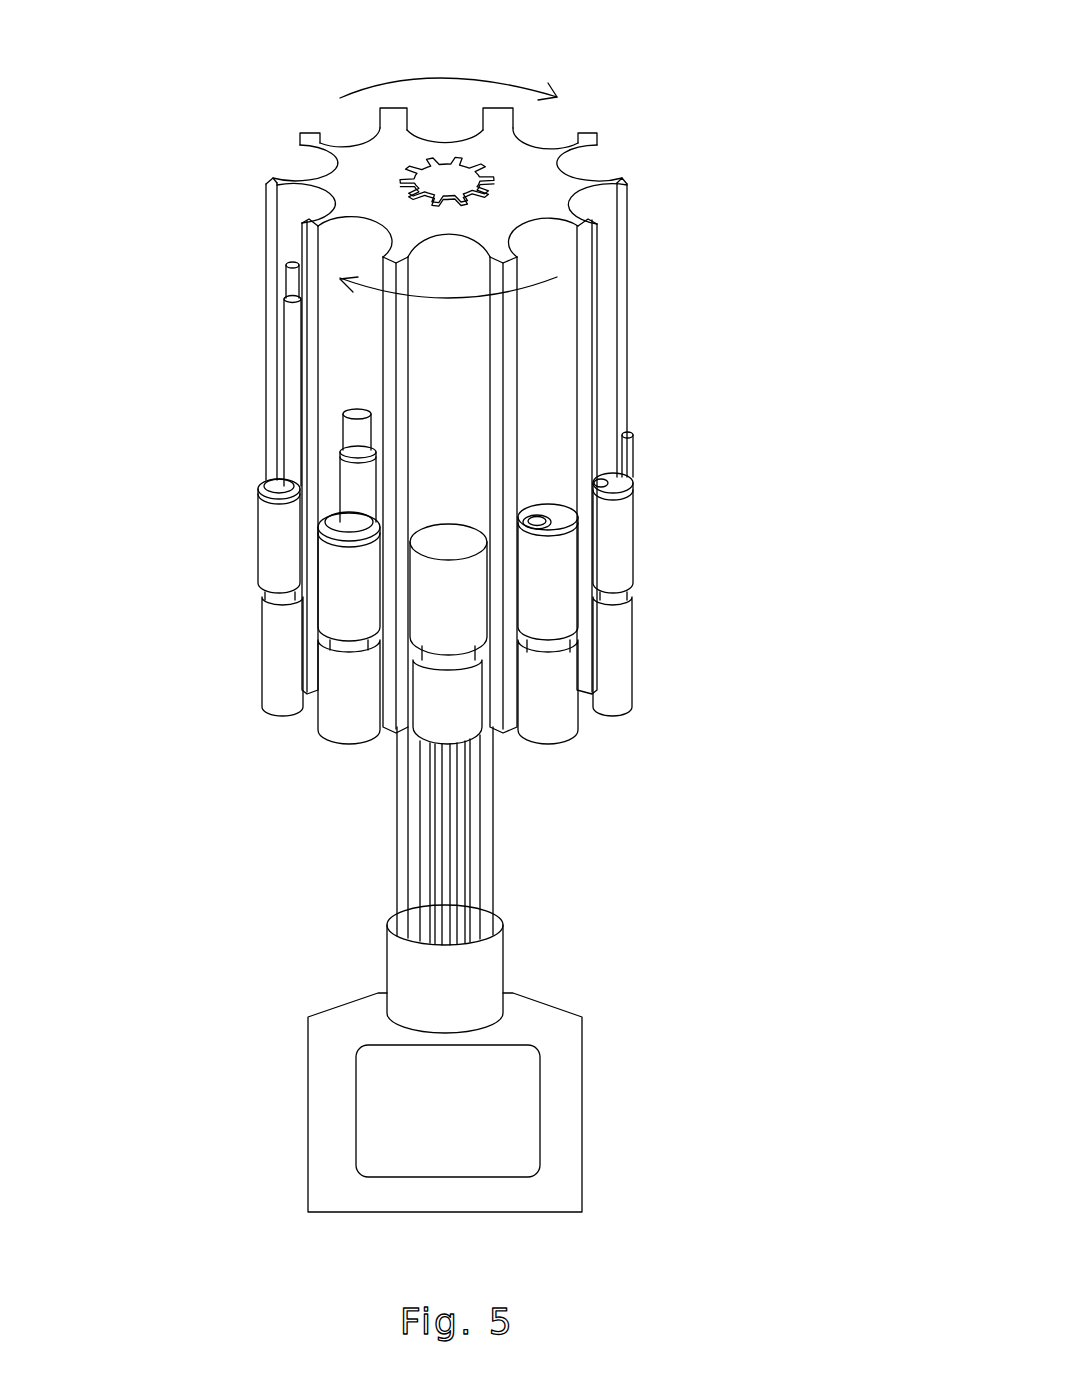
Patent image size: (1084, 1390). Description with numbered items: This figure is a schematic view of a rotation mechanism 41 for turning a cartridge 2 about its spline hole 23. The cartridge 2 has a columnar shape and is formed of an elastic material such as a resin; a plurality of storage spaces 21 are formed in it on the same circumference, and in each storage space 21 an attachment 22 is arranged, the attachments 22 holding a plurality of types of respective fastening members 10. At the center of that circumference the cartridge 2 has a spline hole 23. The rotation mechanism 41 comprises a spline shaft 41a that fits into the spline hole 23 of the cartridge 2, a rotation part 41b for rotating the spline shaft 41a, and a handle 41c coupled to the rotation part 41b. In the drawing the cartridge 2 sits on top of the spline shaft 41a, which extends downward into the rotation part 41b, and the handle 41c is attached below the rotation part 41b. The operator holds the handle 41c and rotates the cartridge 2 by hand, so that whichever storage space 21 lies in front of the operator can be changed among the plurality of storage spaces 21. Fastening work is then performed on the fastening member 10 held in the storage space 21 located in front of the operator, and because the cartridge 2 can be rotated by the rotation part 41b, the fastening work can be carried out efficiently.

The cartridge 2 is at (500, 376).
The storage space 21 is at (565, 255).
The attachment 22 is at (620, 544).
The spline hole 23 is at (448, 160).
The fastening member 10 is at (620, 484).
The rotation mechanism 41 is at (529, 969).
The spline shaft 41a is at (493, 837).
The rotation part 41b is at (503, 963).
The handle 41c is at (496, 1102).